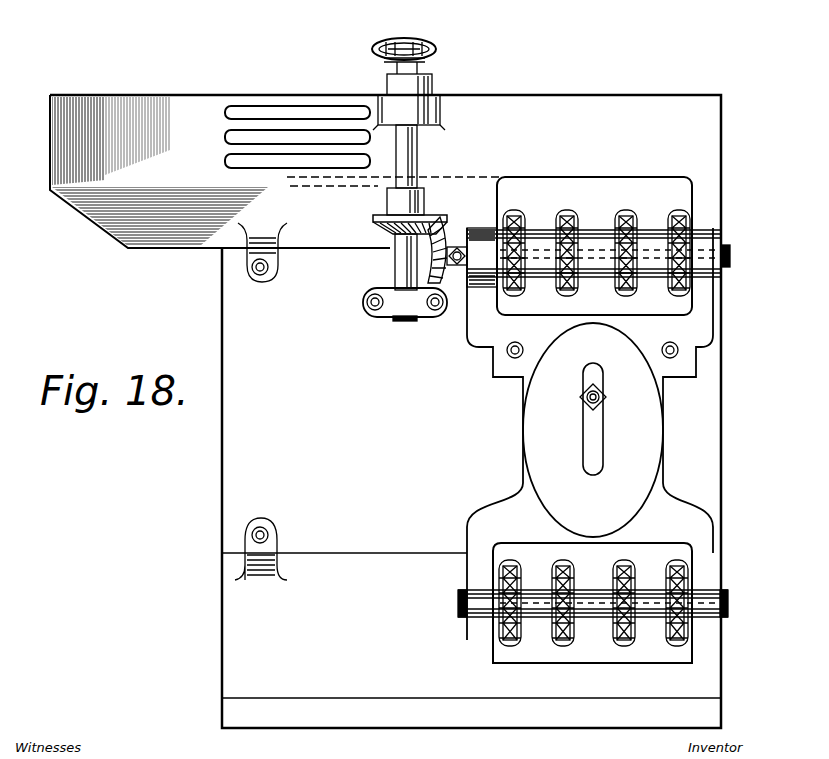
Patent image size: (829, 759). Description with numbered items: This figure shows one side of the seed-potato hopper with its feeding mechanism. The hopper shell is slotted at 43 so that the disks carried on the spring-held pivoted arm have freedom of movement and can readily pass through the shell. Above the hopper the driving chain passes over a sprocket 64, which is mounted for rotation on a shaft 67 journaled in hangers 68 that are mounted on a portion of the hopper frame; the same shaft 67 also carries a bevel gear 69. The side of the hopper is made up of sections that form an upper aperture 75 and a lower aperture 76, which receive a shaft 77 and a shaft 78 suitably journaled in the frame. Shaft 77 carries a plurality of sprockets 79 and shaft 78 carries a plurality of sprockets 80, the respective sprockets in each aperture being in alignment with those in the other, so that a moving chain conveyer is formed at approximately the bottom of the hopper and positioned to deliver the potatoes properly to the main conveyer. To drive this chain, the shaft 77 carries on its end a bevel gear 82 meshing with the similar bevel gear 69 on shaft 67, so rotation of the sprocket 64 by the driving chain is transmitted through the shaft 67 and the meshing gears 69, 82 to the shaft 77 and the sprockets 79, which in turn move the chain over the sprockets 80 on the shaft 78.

The slot 43 is at (297, 164).
The sprocket 64 is at (413, 40).
The hanger 68 is at (415, 87).
The shaft 67 is at (412, 155).
The bevel gear 69 is at (380, 228).
The bevel gear 82 is at (448, 232).
The aperture 75 is at (594, 246).
The shaft 77 is at (728, 255).
The sprockets 79 is at (627, 292).
The aperture 76 is at (592, 603).
The sprockets 80 is at (640, 563).
The shaft 78 is at (729, 603).